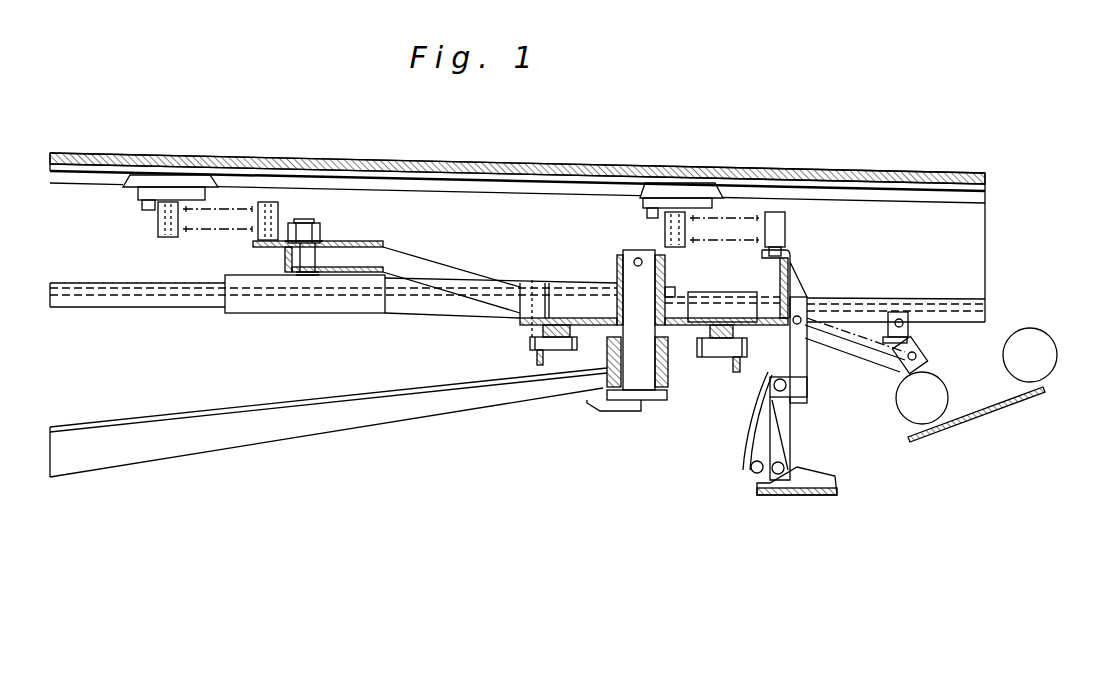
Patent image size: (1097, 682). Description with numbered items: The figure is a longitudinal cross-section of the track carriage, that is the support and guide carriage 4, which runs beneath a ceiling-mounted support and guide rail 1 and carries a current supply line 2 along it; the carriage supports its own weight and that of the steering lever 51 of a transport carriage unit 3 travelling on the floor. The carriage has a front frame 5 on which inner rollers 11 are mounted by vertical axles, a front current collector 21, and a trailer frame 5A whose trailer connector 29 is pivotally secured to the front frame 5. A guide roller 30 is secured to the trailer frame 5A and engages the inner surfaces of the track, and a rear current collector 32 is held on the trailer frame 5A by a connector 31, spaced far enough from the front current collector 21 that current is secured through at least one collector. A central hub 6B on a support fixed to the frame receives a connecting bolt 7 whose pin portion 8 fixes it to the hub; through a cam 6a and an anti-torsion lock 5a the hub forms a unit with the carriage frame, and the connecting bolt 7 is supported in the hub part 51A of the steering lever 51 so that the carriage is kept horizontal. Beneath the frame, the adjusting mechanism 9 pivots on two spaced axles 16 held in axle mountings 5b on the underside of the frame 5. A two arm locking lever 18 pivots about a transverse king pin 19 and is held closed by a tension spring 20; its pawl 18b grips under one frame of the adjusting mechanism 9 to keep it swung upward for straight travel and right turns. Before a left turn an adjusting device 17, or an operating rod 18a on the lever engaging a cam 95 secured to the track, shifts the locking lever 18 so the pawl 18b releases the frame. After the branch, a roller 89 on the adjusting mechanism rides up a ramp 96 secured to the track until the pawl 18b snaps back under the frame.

The support and guide rail 1 is at (963, 169).
The current supply line 2 is at (982, 195).
The transport carriage unit 3 is at (637, 370).
The support and guide carriage 4 is at (590, 303).
The front frame 5 is at (676, 330).
The trailer frame 5A is at (370, 241).
The anti-torsion lock 5a is at (668, 303).
The axle mountings 5b is at (556, 355).
The central hub 6B is at (631, 253).
The cam 6a is at (669, 275).
The connecting bolt 7 is at (650, 400).
The pin portion 8 is at (640, 258).
The adjusting mechanism 9 is at (501, 327).
The inner rollers 11 is at (728, 315).
The axles 16 is at (528, 347).
The adjusting device 17 is at (878, 305).
The two arm locking lever 18 is at (784, 445).
The operating rod 18a is at (780, 466).
The pawl 18b is at (745, 470).
The king pin 19 is at (786, 386).
The tension spring 20 is at (833, 327).
The front current collector 21 is at (663, 192).
The trailer connector 29 is at (458, 275).
The guide roller 30 is at (260, 298).
The connector 31 is at (298, 238).
The rear current collector 32 is at (133, 182).
The steering lever 51 is at (102, 445).
The hub part 51A is at (607, 367).
The roller 89 is at (1000, 363).
The cam 95 is at (808, 497).
The ramp 96 is at (977, 407).